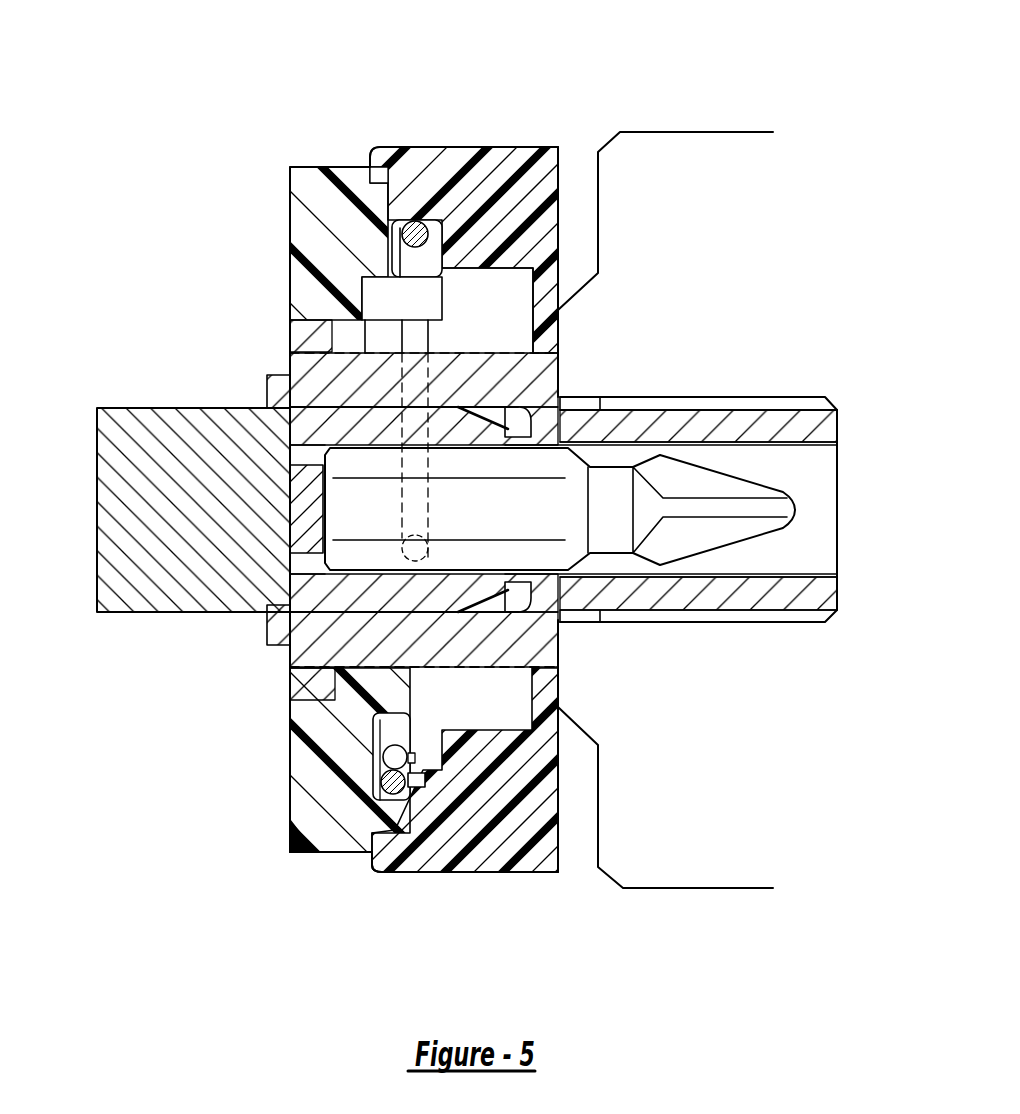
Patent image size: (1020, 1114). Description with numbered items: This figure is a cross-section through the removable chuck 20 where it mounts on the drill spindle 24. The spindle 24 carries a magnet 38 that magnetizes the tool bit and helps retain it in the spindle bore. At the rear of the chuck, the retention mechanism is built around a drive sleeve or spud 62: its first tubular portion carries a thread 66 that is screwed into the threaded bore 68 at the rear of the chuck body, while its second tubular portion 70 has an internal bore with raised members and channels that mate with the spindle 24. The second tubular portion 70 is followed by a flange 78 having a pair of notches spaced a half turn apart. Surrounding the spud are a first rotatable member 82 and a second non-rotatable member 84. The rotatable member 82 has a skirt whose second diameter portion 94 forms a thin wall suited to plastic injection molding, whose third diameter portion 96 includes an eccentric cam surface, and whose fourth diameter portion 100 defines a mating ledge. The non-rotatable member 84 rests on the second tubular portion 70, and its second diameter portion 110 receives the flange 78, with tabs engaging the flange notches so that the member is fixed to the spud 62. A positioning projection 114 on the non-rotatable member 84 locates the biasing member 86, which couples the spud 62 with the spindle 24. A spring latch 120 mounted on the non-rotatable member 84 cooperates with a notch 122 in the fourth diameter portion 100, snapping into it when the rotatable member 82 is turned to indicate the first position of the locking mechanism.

The removable chuck 20 is at (722, 108).
The spindle 24 is at (97, 625).
The magnet 38 is at (307, 512).
The drive sleeve or spud 62 is at (290, 667).
The thread 66 is at (775, 405).
The threaded bore 68 is at (713, 402).
The second tubular portion 70 is at (485, 667).
The flange 78 is at (300, 747).
The first rotatable member 82 is at (425, 218).
The second non-rotatable member 84 is at (287, 813).
The biasing member 86 is at (397, 258).
The second diameter portion 94 is at (490, 725).
The third diameter portion 96 is at (412, 247).
The fourth diameter portion 100 is at (333, 193).
The second diameter portion 110 is at (300, 333).
The positioning projection 114 is at (483, 280).
The spring latch 120 is at (330, 853).
The notch 122 is at (425, 787).